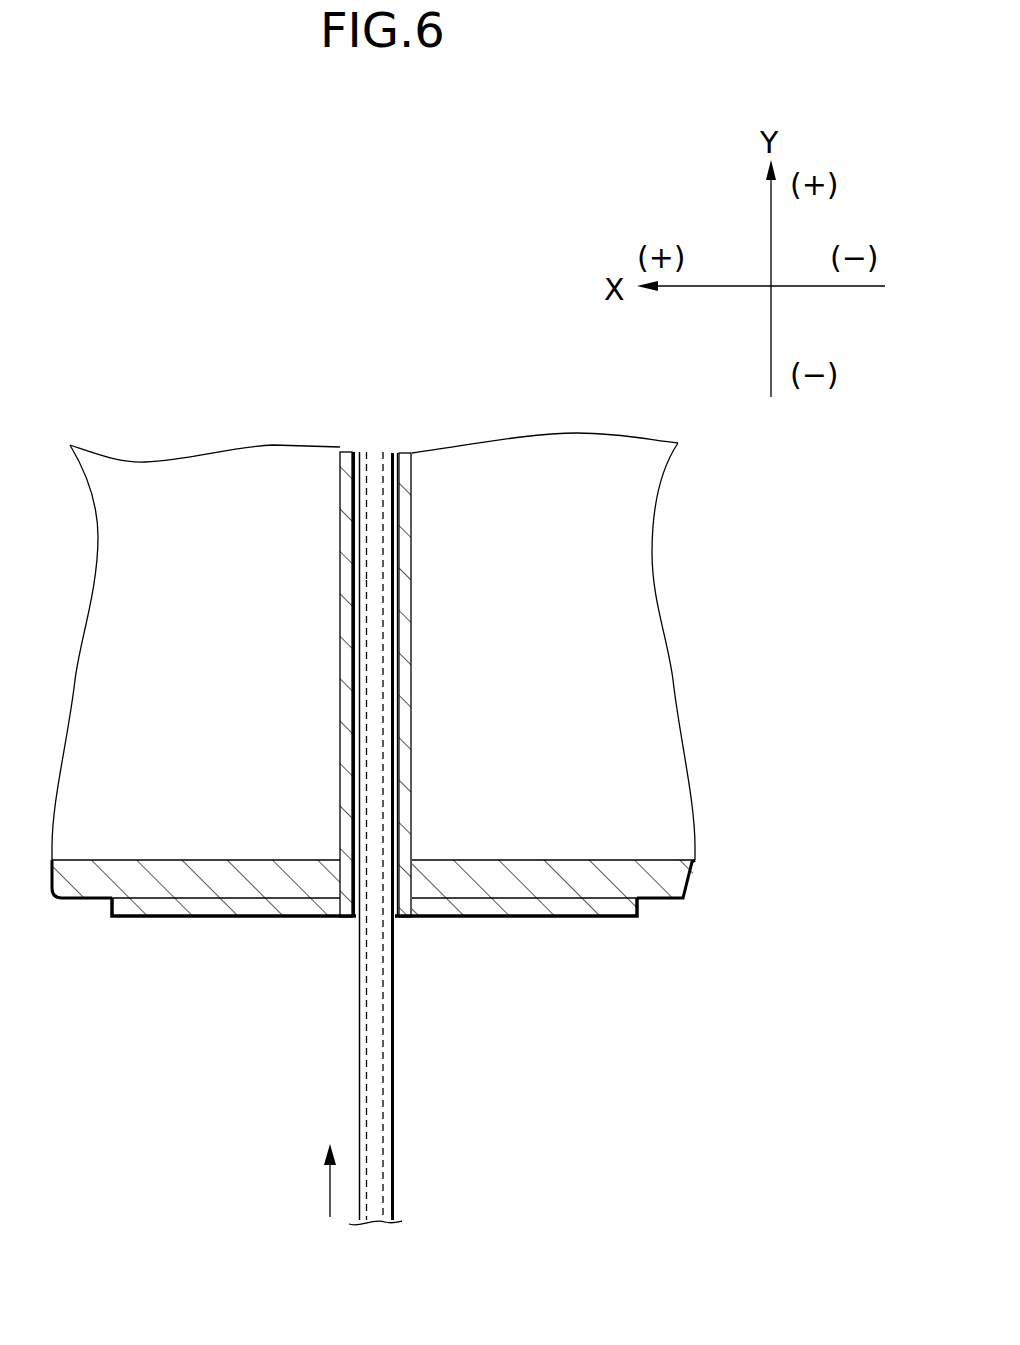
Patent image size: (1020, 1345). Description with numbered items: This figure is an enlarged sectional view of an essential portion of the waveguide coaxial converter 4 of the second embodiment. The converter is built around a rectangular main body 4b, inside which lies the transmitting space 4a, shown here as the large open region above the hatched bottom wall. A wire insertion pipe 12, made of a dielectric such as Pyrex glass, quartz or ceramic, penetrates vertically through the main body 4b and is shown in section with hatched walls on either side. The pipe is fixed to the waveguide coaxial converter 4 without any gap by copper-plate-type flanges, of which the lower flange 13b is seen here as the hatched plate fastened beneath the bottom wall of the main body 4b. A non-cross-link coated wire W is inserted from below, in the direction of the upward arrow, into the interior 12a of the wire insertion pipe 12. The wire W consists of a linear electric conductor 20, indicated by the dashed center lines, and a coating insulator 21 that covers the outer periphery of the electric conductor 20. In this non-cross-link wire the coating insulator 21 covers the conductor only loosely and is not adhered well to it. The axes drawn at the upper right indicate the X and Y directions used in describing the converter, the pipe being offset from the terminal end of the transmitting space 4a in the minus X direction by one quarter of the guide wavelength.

The waveguide coaxial converter 4 is at (404, 723).
The transmitting space 4a is at (635, 638).
The main body 4b is at (676, 882).
The wire insertion pipe 12 is at (413, 637).
The interior of the wire insertion pipe 12a is at (368, 566).
The lower flange 13b is at (588, 912).
The electric conductor 20 is at (385, 960).
The coating insulator 21 is at (357, 1014).
The non-cross-link coated wire W is at (383, 838).